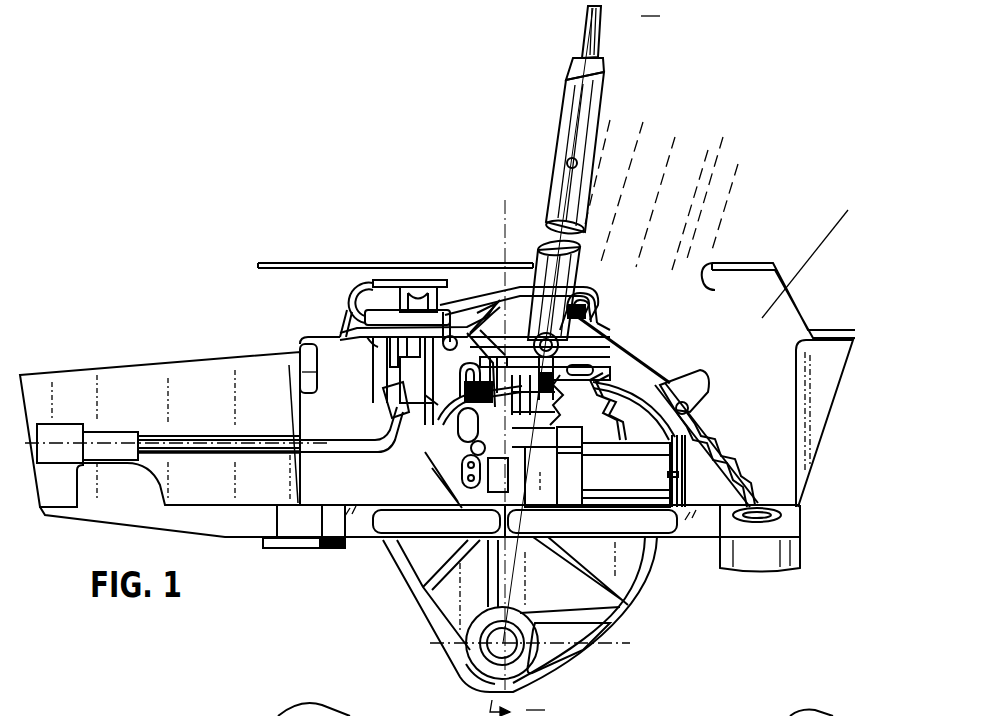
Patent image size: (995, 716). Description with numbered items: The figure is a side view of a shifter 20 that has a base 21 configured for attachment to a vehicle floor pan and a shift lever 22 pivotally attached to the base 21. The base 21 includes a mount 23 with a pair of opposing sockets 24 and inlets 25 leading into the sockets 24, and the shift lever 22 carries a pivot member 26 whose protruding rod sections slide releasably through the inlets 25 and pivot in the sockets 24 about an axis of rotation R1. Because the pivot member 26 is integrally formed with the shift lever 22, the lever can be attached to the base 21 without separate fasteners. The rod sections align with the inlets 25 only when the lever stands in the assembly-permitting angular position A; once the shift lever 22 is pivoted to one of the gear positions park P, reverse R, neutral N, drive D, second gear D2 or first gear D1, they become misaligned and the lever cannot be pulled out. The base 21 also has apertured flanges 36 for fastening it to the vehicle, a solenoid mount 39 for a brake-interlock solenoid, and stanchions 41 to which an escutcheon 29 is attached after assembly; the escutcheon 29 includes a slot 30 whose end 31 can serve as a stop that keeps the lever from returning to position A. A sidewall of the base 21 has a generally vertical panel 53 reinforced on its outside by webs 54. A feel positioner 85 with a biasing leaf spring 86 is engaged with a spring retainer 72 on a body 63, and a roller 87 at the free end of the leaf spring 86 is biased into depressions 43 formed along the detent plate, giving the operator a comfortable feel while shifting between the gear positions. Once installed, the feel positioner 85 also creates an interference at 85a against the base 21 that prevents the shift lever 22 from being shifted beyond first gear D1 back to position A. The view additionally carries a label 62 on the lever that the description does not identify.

The shifter 20 is at (720, 52).
The base 21 is at (90, 367).
The shift lever 22 is at (606, 99).
The mount 23 is at (433, 628).
The sockets 24 is at (462, 666).
The inlets 25 is at (563, 673).
The pivot member 26 is at (553, 592).
The escutcheon 29 is at (738, 266).
The slot 30 is at (655, 280).
The end 31 is at (720, 283).
The apertured flanges 36 is at (270, 546).
The solenoid mount 39 is at (385, 390).
The stanchions 41 is at (843, 368).
The depressions 43 is at (727, 470).
The generally vertical panel 53 is at (453, 588).
The webs 54 is at (443, 560).
The knob 62 is at (562, 105).
The body 63 is at (491, 283).
The spring retainer 72 is at (597, 293).
The feel positioner 85 is at (619, 348).
The interference 85a is at (787, 503).
The biasing leaf spring 86 is at (612, 340).
The roller 87 is at (700, 408).
The assembly-permitting angular position A is at (835, 227).
The park gear position P is at (610, 120).
The reverse gear position R is at (643, 122).
The neutral gear position N is at (675, 137).
The drive gear position D is at (708, 150).
The second gear position D2 is at (733, 123).
The first gear position D1 is at (738, 164).
The axis of rotation R1 is at (483, 677).